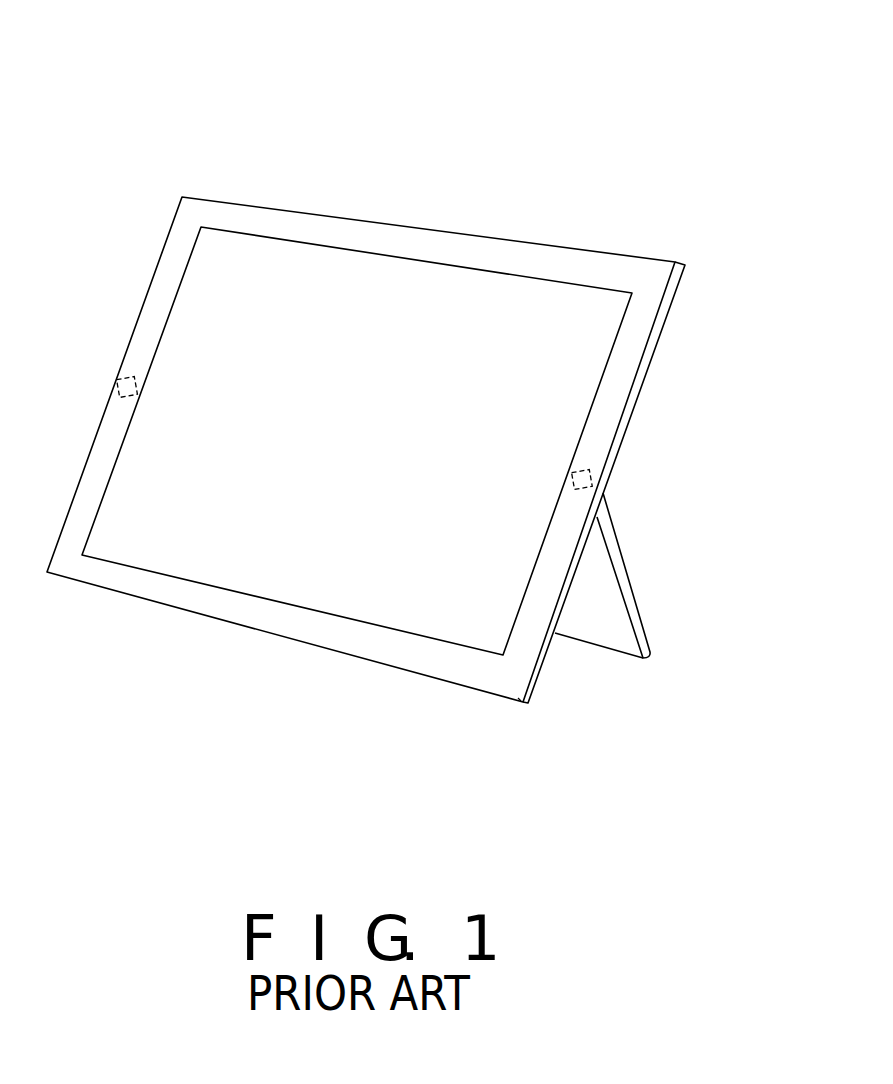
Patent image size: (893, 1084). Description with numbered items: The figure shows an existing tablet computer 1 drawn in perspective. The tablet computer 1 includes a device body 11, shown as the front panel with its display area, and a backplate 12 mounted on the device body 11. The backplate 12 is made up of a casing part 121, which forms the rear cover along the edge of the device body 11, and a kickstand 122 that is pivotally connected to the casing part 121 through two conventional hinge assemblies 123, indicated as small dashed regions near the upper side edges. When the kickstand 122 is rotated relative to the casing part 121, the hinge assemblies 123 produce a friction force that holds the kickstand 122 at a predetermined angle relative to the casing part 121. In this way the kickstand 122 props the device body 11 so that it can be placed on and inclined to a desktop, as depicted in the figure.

The tablet computer 1 is at (421, 365).
The device body 11 is at (582, 268).
The backplate 12 is at (425, 482).
The casing part 121 is at (628, 425).
The kickstand 122 is at (613, 620).
The hinge assemblies 123 is at (115, 382).